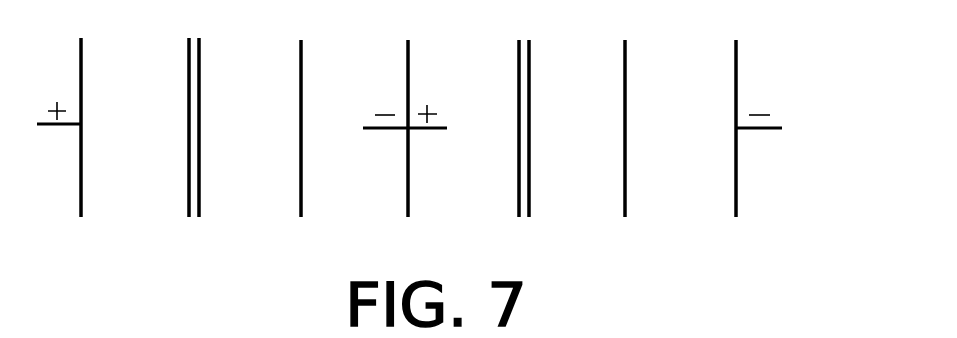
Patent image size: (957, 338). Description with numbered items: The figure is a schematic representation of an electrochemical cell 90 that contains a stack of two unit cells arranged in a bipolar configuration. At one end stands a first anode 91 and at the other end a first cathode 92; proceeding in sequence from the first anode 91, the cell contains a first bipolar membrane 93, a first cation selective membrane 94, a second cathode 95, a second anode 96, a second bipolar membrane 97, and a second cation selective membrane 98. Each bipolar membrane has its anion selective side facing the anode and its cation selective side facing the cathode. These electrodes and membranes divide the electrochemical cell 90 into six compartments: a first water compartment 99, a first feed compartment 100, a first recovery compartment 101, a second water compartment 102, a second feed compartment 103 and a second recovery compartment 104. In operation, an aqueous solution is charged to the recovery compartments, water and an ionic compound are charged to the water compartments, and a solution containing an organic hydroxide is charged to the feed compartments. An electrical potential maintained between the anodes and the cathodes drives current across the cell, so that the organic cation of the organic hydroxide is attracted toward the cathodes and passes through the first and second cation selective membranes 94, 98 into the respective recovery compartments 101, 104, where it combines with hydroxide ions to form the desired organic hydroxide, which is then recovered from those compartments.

The electrochemical cell 90 is at (808, 76).
The first anode 91 is at (62, 109).
The first cathode 92 is at (751, 109).
The first bipolar membrane 93 is at (191, 131).
The first cation selective membrane 94 is at (297, 131).
The second cathode 95 is at (385, 65).
The second anode 96 is at (430, 109).
The second bipolar membrane 97 is at (520, 131).
The second cation selective membrane 98 is at (622, 131).
The first water compartment 99 is at (134, 202).
The first feed compartment 100 is at (247, 202).
The first recovery compartment 101 is at (354, 202).
The second water compartment 102 is at (466, 202).
The second feed compartment 103 is at (575, 202).
The second recovery compartment 104 is at (683, 202).